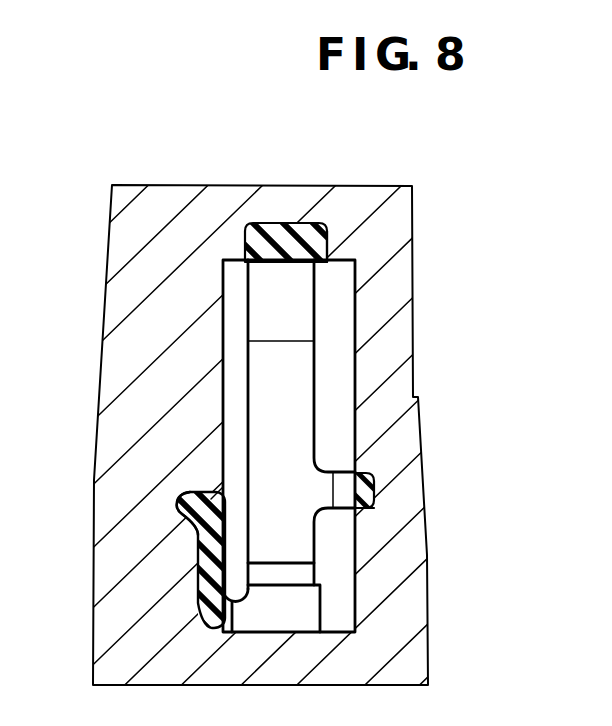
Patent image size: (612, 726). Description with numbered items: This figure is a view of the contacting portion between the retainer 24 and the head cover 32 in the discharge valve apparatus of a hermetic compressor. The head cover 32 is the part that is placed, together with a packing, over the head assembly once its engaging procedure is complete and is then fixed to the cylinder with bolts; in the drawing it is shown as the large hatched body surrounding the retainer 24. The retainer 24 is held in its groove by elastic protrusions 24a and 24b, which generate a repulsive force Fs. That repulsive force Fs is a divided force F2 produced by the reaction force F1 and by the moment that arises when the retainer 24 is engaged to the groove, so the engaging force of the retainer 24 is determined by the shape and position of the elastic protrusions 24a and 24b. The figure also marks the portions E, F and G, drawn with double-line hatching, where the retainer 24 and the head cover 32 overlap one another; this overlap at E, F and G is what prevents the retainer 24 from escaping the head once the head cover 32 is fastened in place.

The head cover 32 is at (403, 208).
The retainer 24 is at (316, 372).
The divided force F2 is at (236, 238).
The overlapping portion E is at (326, 244).
The elastic protrusion 24b is at (373, 472).
The reaction force F1 is at (373, 490).
The overlapping portion F is at (373, 507).
The overlapping portion G is at (200, 548).
The repulsive force Fs is at (170, 503).
The elastic protrusion 24a is at (177, 517).